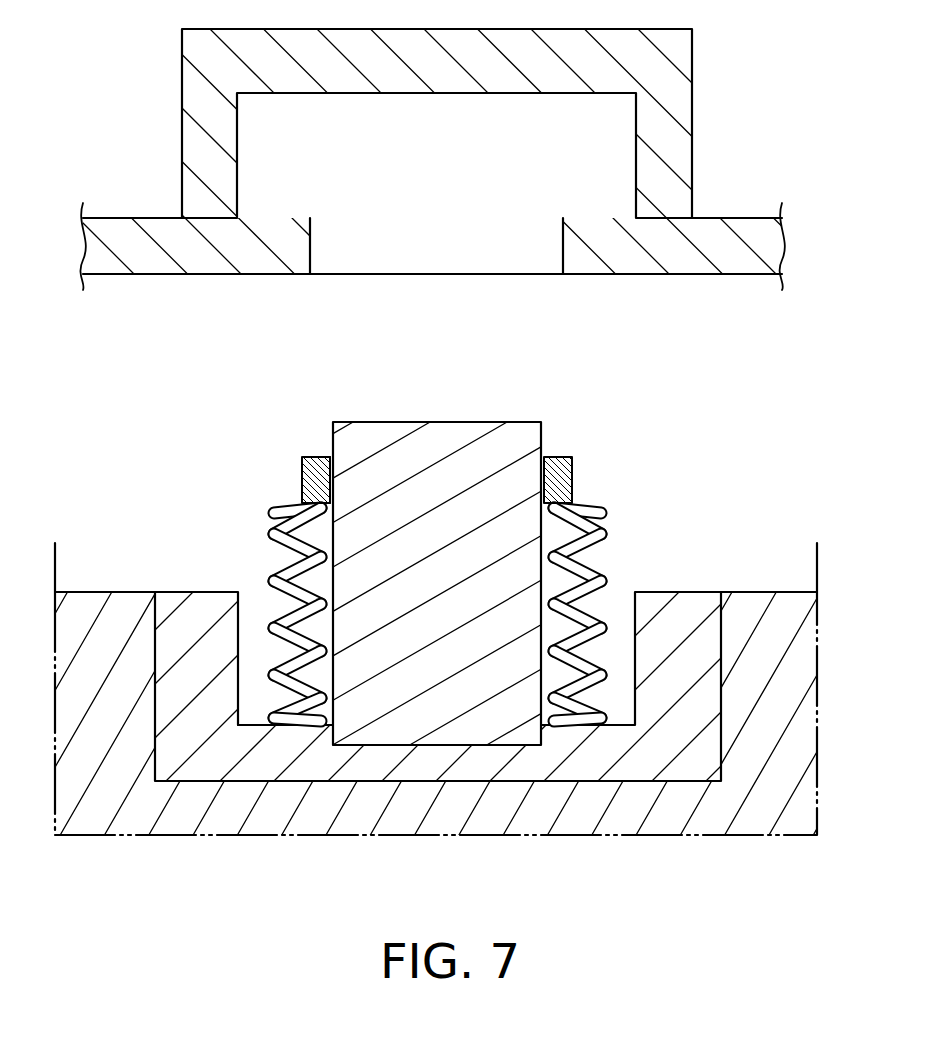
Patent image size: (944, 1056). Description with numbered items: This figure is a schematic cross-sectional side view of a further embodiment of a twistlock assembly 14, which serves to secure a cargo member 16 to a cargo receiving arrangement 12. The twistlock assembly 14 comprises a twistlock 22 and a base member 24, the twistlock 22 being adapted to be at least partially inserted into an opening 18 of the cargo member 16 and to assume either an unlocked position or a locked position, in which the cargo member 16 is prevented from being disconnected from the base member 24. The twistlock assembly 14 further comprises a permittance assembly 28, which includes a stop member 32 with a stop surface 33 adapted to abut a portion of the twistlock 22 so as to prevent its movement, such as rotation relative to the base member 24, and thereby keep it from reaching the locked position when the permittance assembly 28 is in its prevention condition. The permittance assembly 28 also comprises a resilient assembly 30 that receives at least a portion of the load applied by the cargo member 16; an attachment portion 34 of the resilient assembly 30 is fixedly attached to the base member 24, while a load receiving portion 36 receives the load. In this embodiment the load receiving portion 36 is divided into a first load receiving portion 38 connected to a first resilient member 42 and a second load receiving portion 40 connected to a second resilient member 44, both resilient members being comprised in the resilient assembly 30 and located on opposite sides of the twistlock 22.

The cargo receiving arrangement 12 is at (90, 753).
The twistlock assembly 14 is at (797, 483).
The cargo member 16 is at (212, 158).
The opening 18 is at (437, 245).
The twistlock 22 is at (475, 467).
The base member 24 is at (222, 752).
The permittance assembly 28 is at (248, 512).
The resilient assembly 30 is at (243, 545).
The stop member 32 is at (308, 457).
The stop surface 33 is at (333, 465).
The attachment portion 34 is at (296, 727).
The load receiving portion 36 is at (588, 503).
The first load receiving portion 38 is at (638, 487).
The second load receiving portion 40 is at (245, 452).
The first resilient member 42 is at (625, 577).
The second resilient member 44 is at (238, 578).